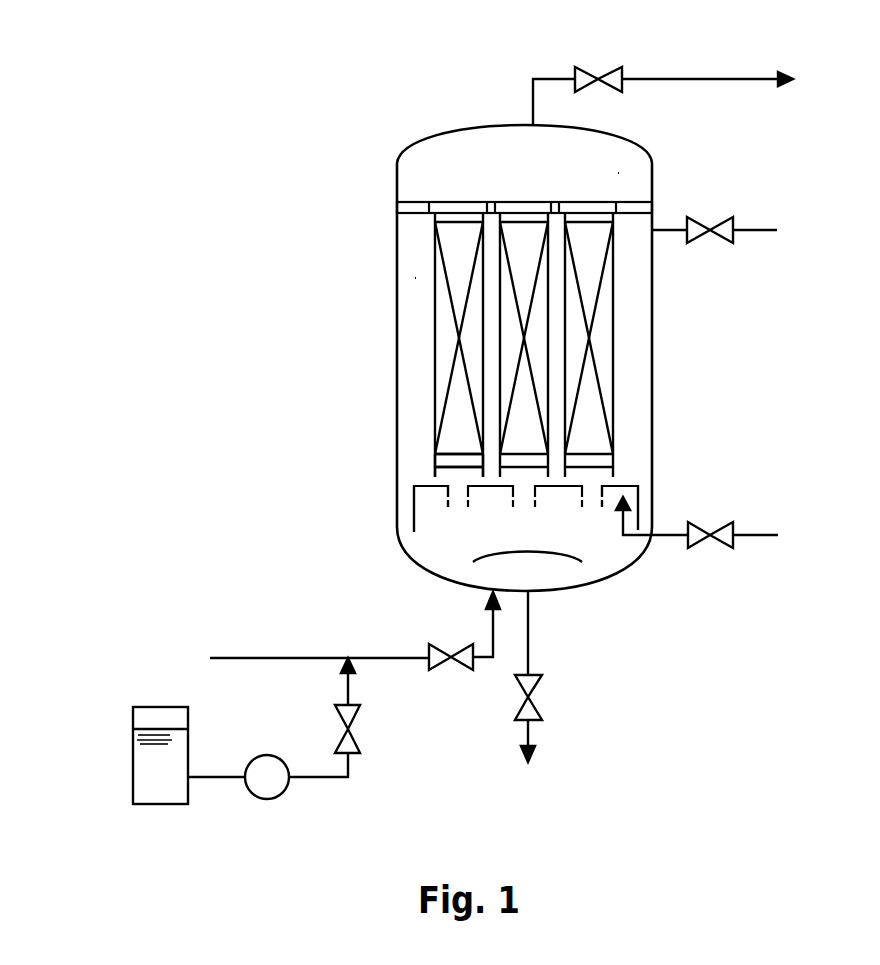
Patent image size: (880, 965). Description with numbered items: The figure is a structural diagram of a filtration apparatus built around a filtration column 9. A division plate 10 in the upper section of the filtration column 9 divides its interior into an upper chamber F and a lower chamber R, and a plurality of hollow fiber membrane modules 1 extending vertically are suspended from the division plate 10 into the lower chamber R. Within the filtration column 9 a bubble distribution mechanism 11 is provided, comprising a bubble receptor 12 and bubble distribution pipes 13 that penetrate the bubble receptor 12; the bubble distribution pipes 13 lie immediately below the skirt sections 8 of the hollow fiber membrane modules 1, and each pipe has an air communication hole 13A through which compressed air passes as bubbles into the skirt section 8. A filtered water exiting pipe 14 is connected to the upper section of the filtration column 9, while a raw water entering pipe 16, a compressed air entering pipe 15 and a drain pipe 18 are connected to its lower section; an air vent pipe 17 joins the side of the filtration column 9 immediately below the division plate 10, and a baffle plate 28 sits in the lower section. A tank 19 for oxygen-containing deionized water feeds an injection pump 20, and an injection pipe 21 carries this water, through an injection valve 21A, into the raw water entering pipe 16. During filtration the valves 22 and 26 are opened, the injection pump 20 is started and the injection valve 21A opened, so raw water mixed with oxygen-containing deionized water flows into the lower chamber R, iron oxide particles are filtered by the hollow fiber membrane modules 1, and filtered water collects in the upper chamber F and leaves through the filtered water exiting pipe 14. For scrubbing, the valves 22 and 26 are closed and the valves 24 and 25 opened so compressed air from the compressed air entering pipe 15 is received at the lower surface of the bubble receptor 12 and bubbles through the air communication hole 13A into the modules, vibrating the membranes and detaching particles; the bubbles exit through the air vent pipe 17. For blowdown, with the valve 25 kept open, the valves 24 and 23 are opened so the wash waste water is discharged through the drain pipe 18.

The hollow fiber membrane module 1 is at (615, 288).
The skirt section 8 is at (435, 472).
The filtration column 9 is at (652, 397).
The division plate 10 is at (408, 215).
The bubble distribution mechanism 11 is at (423, 487).
The bubble receptor 12 is at (620, 484).
The bubble distribution pipe 13 is at (433, 496).
The air communication hole 13A is at (606, 490).
The filtered water exiting pipe 14 is at (667, 79).
The compressed air entering pipe 15 is at (753, 535).
The raw water entering pipe 16 is at (490, 613).
The air vent pipe 17 is at (755, 230).
The drain pipe 18 is at (528, 613).
The tank for oxygen-containing deionized water 19 is at (133, 747).
The injection pump 20 is at (263, 755).
The injection pipe 21 is at (348, 685).
The injection valve 21A is at (353, 718).
The valve 22 is at (458, 660).
The valve 23 is at (537, 697).
The valve 24 is at (702, 527).
The valve 25 is at (702, 223).
The valve 26 is at (585, 68).
The baffle plate 28 is at (482, 556).
The lower chamber R is at (415, 278).
The upper chamber F is at (618, 173).